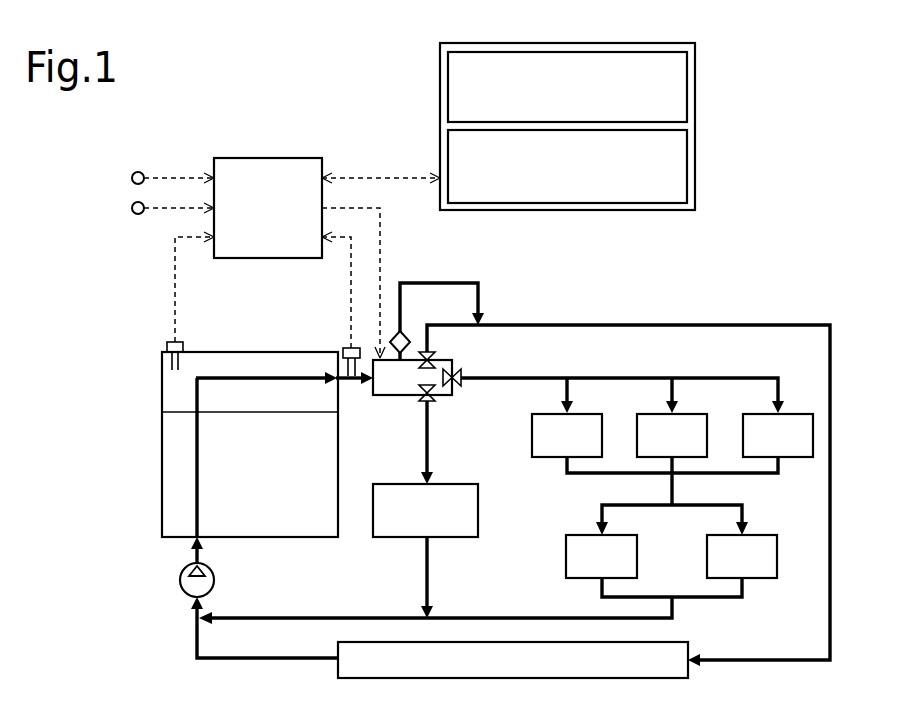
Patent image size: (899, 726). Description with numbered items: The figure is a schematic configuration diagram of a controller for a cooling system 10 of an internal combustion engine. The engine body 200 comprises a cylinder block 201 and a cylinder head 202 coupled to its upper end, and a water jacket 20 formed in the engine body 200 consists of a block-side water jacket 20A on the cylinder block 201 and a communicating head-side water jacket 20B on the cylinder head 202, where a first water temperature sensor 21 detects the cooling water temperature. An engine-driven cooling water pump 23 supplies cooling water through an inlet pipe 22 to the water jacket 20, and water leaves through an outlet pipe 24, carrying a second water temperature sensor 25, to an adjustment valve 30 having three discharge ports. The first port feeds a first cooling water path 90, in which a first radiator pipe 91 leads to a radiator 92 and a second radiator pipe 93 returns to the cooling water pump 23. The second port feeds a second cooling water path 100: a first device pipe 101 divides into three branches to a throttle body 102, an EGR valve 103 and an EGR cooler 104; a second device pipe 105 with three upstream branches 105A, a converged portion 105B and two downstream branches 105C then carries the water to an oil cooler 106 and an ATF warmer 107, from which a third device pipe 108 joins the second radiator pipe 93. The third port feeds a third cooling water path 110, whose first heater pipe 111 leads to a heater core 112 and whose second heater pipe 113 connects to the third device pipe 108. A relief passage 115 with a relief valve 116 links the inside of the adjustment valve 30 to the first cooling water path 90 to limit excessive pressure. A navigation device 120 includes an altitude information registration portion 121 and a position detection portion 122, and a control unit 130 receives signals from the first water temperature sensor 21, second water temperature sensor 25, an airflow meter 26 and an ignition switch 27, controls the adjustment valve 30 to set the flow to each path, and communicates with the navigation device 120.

The cooling system 10 is at (820, 166).
The water jacket 20 is at (276, 425).
The block-side water jacket 20A is at (198, 466).
The head-side water jacket 20B is at (246, 380).
The first water temperature sensor 21 is at (183, 348).
The inlet pipe 22 is at (190, 552).
The cooling water pump 23 is at (214, 580).
The outlet pipe 24 is at (353, 379).
The second water temperature sensor 25 is at (343, 348).
The airflow meter 26 is at (132, 178).
The ignition switch 27 is at (132, 208).
The adjustment valve 30 is at (398, 395).
The first cooling water path 90 is at (555, 325).
The first radiator pipe 91 is at (685, 325).
The radiator 92 is at (515, 678).
The second radiator pipe 93 is at (265, 658).
The second cooling water path 100 is at (515, 378).
The first device pipe 101 is at (615, 378).
The throttle body 102 is at (548, 412).
The EGR valve 103 is at (651, 413).
The EGR cooler 104 is at (757, 413).
The second device pipe 105 is at (753, 495).
The upstream branches 105A is at (566, 462).
The converged portion 105B is at (672, 488).
The downstream branches 105C is at (602, 510).
The oil cooler 106 is at (566, 560).
The ATF warmer 107 is at (707, 560).
The third device pipe 108 is at (676, 607).
The third cooling water path 110 is at (428, 432).
The first heater pipe 111 is at (427, 455).
The heater core 112 is at (392, 540).
The second heater pipe 113 is at (428, 571).
The relief passage 115 is at (438, 283).
The relief valve 116 is at (408, 337).
The navigation device 120 is at (645, 43).
The altitude information registration portion 121 is at (695, 84).
The position detection portion 122 is at (695, 164).
The control unit 130 is at (267, 158).
The engine body 200 is at (84, 385).
The cylinder block 201 is at (162, 436).
The cylinder head 202 is at (162, 395).